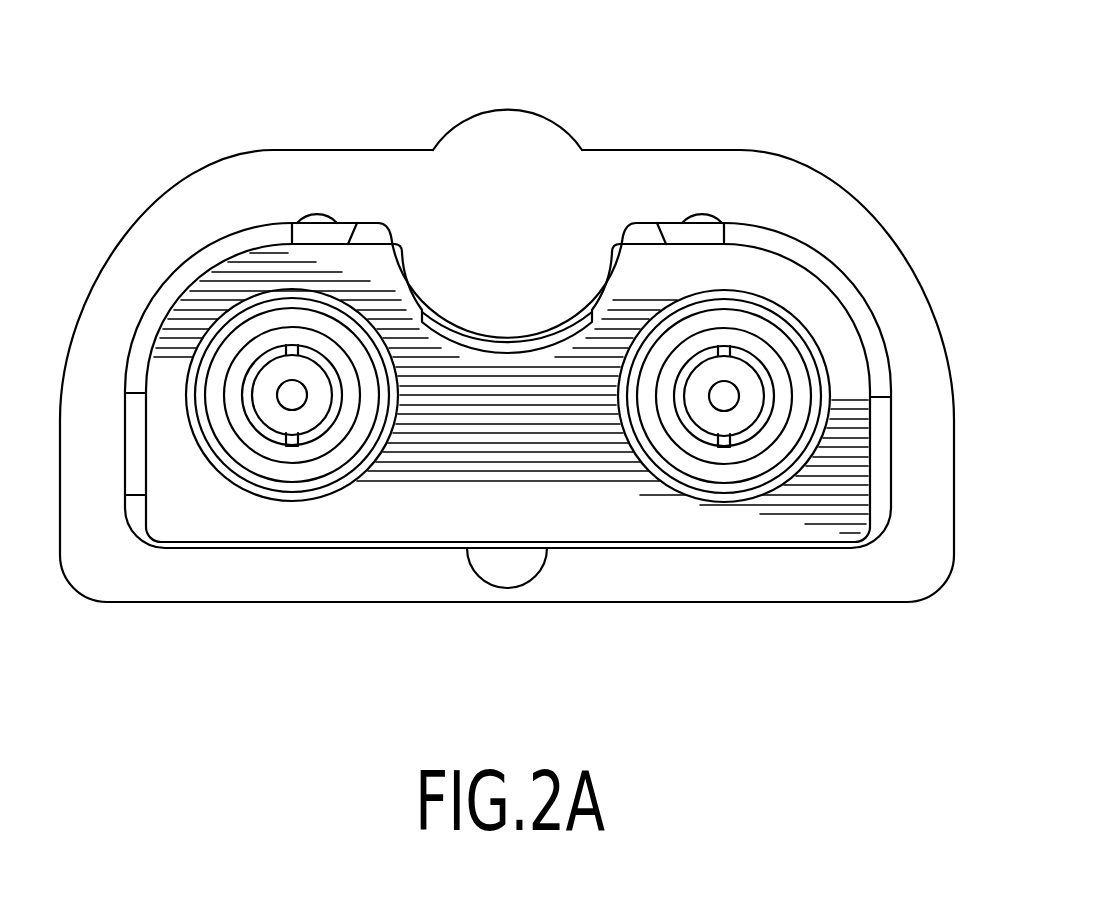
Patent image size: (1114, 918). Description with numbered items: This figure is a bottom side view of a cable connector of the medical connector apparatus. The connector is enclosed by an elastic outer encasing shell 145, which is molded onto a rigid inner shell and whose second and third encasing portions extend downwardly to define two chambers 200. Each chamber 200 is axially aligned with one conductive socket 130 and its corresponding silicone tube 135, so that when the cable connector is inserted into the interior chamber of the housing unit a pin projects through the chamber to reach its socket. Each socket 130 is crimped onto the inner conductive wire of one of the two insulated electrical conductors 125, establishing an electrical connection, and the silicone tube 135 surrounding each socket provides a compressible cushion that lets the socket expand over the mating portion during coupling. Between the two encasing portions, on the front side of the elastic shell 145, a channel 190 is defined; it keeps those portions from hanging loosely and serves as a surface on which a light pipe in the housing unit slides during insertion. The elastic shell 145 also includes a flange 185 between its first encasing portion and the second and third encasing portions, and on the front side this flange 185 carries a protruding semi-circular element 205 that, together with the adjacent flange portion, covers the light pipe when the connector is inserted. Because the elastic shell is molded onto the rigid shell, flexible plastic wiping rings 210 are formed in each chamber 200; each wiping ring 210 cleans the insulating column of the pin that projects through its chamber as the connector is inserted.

The insulated electrical conductor 125 is at (740, 411).
The conductive socket 130 is at (780, 397).
The silicone tube 135 is at (788, 357).
The elastic outer encasing shell 145 is at (840, 273).
The flange 185 is at (752, 150).
The channel 190 is at (447, 318).
The chamber 200 is at (273, 499).
The protruding semi-circular element 205 is at (557, 116).
The wiping ring 210 is at (325, 490).